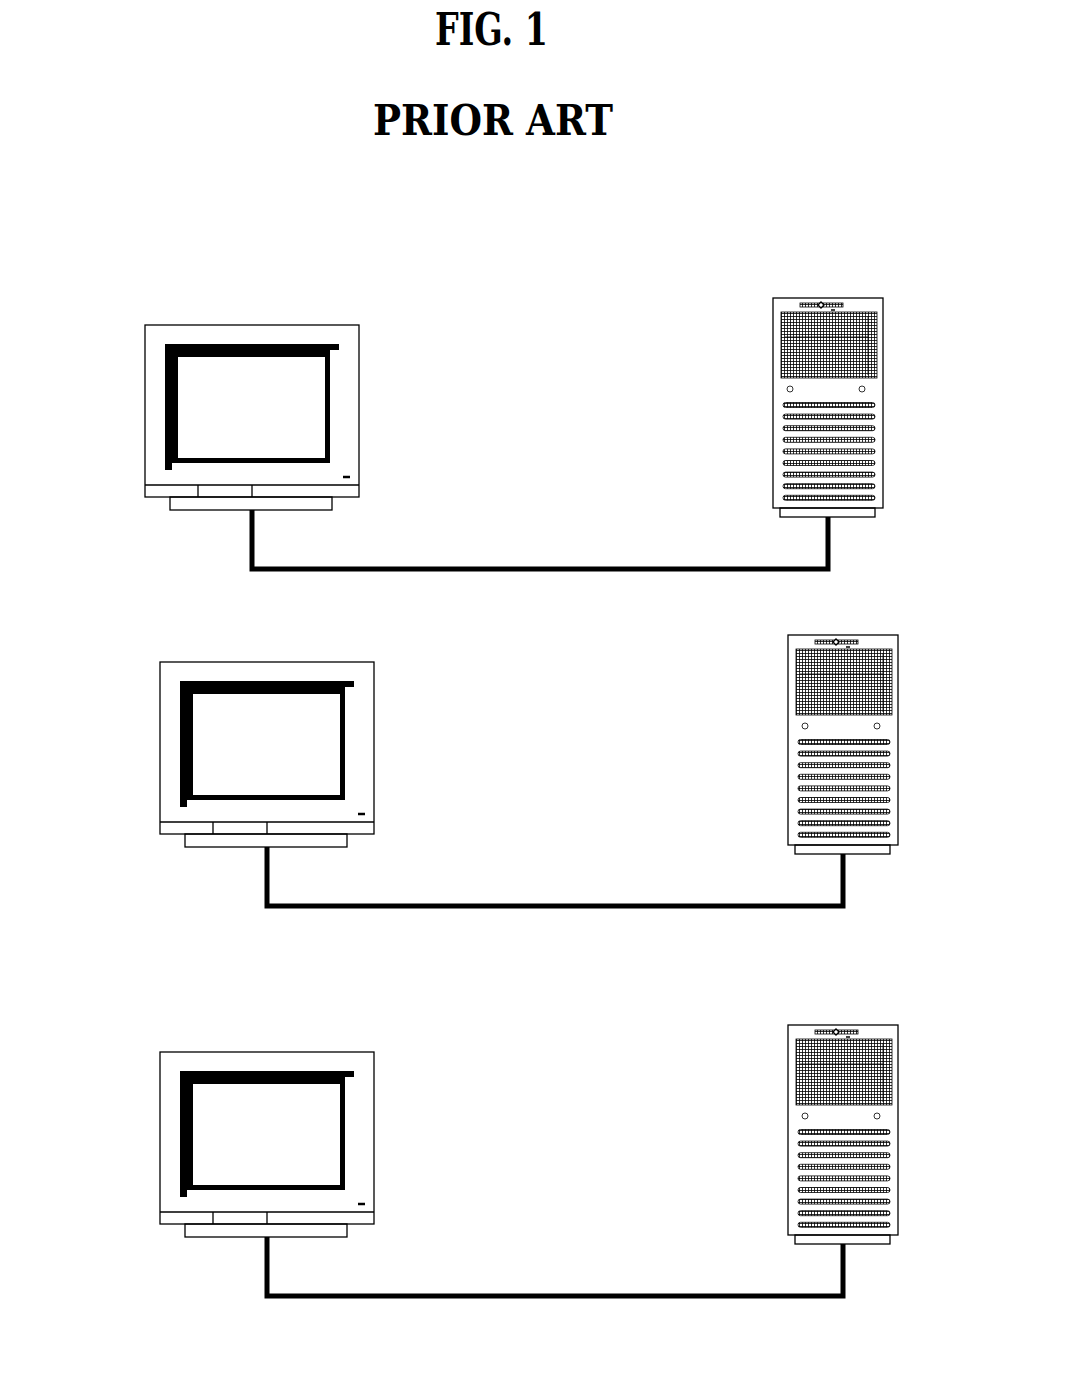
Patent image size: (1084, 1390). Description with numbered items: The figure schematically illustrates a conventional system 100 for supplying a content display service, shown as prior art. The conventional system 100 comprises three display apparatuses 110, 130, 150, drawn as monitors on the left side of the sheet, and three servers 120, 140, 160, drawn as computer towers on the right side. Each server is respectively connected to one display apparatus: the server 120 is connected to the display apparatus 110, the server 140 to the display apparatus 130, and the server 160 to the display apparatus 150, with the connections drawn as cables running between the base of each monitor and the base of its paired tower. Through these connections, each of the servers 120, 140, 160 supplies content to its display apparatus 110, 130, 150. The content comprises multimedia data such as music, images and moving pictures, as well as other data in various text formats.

The conventional system 100 is at (132, 204).
The display apparatus 110 is at (252, 324).
The server 120 is at (826, 297).
The display apparatus 130 is at (267, 661).
The server 140 is at (841, 634).
The display apparatus 150 is at (267, 1051).
The server 160 is at (841, 1024).